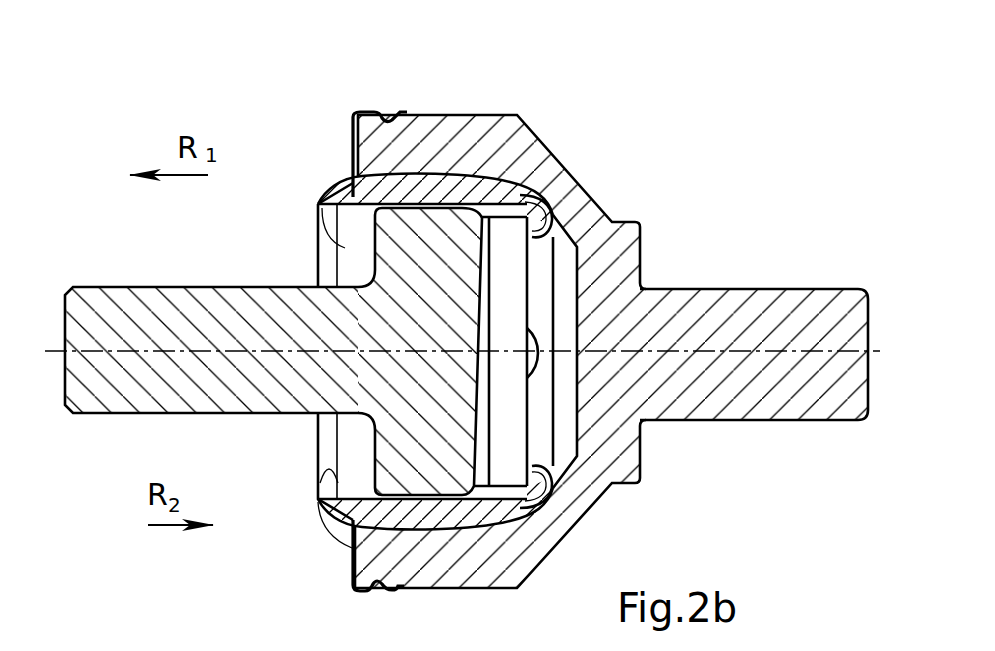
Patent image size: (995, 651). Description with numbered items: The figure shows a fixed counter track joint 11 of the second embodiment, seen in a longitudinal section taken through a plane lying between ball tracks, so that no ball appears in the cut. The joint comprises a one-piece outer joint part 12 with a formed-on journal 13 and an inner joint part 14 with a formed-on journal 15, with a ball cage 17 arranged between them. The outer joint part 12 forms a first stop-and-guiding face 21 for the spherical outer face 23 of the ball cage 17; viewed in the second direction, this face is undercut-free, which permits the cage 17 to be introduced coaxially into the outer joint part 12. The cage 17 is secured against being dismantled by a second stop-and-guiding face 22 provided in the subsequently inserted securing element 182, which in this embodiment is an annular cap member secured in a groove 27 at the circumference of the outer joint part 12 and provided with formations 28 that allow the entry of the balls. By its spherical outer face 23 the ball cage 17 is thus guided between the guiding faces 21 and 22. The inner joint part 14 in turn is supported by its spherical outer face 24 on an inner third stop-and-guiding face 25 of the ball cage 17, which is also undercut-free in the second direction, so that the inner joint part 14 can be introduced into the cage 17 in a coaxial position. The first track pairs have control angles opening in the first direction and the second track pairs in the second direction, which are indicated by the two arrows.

The counter track joint 11 is at (462, 344).
The outer joint part 12 is at (453, 123).
The journal 13 is at (767, 292).
The inner joint part 14 is at (386, 262).
The journal 15 is at (183, 300).
The ball cage 17 is at (316, 498).
The securing element 182 is at (358, 117).
The first stop-and-guiding face 21 is at (487, 187).
The second stop-and-guiding face 22 is at (332, 197).
The spherical outer face 23 is at (473, 167).
The spherical outer face 24 is at (417, 512).
The third stop-and-guiding face 25 is at (545, 509).
The groove 27 is at (383, 113).
The formations 28 is at (330, 528).